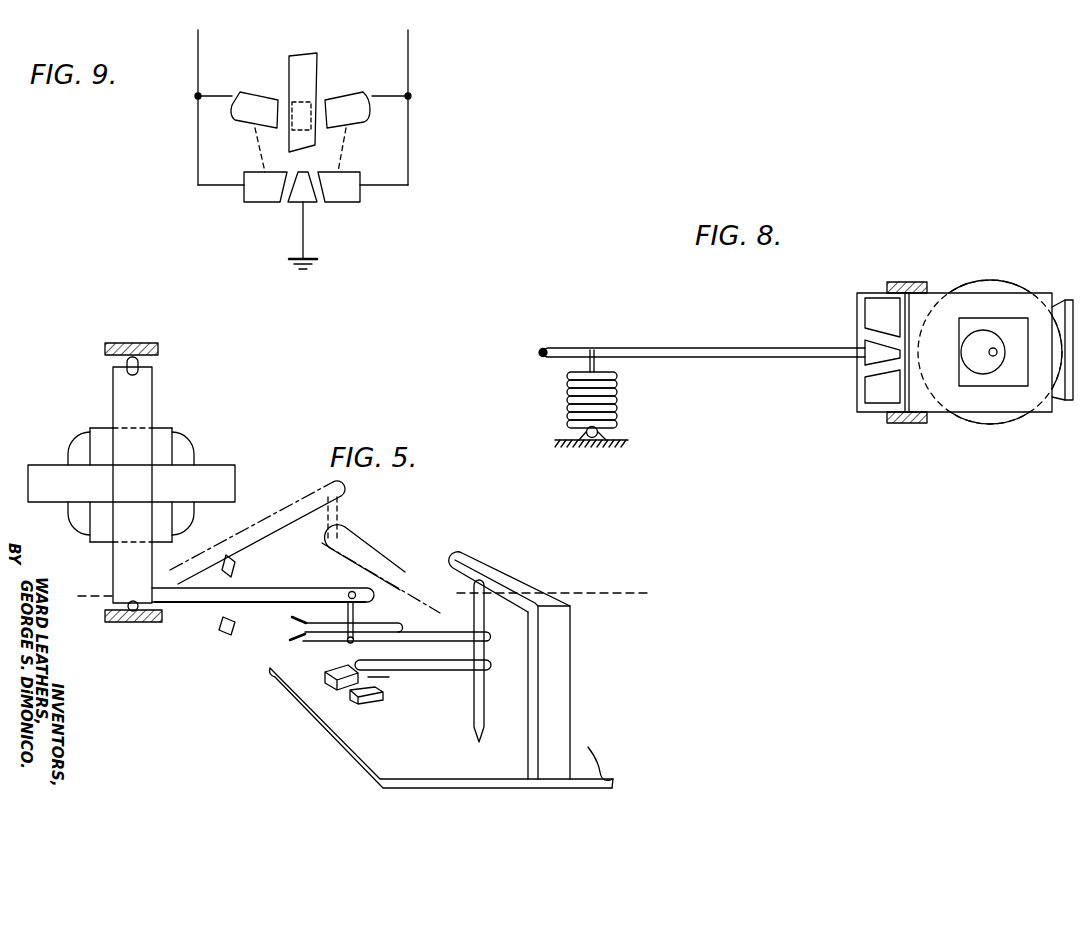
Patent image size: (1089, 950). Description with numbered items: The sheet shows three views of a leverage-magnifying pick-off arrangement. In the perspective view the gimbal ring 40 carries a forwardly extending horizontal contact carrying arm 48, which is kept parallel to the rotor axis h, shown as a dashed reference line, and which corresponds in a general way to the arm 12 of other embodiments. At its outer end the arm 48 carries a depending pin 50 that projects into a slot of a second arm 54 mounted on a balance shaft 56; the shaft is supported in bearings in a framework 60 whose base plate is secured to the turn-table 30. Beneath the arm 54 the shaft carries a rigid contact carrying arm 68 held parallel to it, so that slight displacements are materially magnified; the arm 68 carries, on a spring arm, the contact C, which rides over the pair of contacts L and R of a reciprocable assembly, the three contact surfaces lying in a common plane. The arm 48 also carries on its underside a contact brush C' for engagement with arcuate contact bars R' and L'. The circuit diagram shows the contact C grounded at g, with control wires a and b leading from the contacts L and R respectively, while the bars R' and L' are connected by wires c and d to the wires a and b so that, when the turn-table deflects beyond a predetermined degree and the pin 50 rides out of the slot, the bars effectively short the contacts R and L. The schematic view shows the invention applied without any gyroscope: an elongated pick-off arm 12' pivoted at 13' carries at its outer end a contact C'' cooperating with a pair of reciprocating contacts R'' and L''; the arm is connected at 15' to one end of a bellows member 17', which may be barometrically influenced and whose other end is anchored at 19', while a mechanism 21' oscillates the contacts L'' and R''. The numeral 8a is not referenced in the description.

In FIG. 9, the contact carrying arm 48 is at (306, 64).
In FIG. 5, the contact carrying arm 48 is at (320, 592).
In FIG. 9, the arm 12 is at (327, 230).
In FIG. 9, the control circuit wire a is at (198, 140).
In FIG. 9, the control circuit wire b is at (410, 137).
In FIG. 9, the wire c is at (226, 99).
In FIG. 9, the wire d is at (372, 99).
In FIG. 9, the ground g is at (305, 267).
In FIG. 9, the contact L is at (265, 182).
In FIG. 5, the contact L is at (299, 684).
In FIG. 9, the contact C is at (312, 199).
In FIG. 5, the contact C is at (393, 687).
In FIG. 9, the contact R is at (359, 173).
In FIG. 5, the contact R is at (330, 713).
In FIG. 9, the arcuate contact bar L' is at (355, 93).
In FIG. 9, the contact brush C' is at (321, 96).
In FIG. 5, the contact brush C' is at (250, 619).
In FIG. 9, the arcuate contact bar R' is at (254, 95).
In FIG. 8, the elongated pick-off arm 12' is at (705, 339).
In FIG. 8, the pivot 13' is at (549, 332).
In FIG. 8, the connection 15' is at (616, 339).
In FIG. 8, the bellows member 17' is at (619, 400).
In FIG. 8, the anchor 19' is at (613, 429).
In FIG. 8, the mechanism 21' is at (965, 338).
In FIG. 8, the reciprocating contact R'' is at (858, 317).
In FIG. 8, the contact C'' is at (851, 369).
In FIG. 8, the reciprocating contact L'' is at (857, 407).
In FIG. 5, the gimbal ring 40 is at (140, 406).
In FIG. 5, the pin 50 is at (362, 606).
In FIG. 5, the balance shaft 56 is at (473, 594).
In FIG. 5, the framework 60 is at (336, 624).
In FIG. 5, the contact carrying arm 68 is at (408, 660).
In FIG. 5, the second arm 54 is at (456, 630).
In FIG. 5, the contact 8a is at (418, 671).
In FIG. 5, the turn-table 30 is at (390, 762).
In FIG. 5, the axis h is at (363, 596).